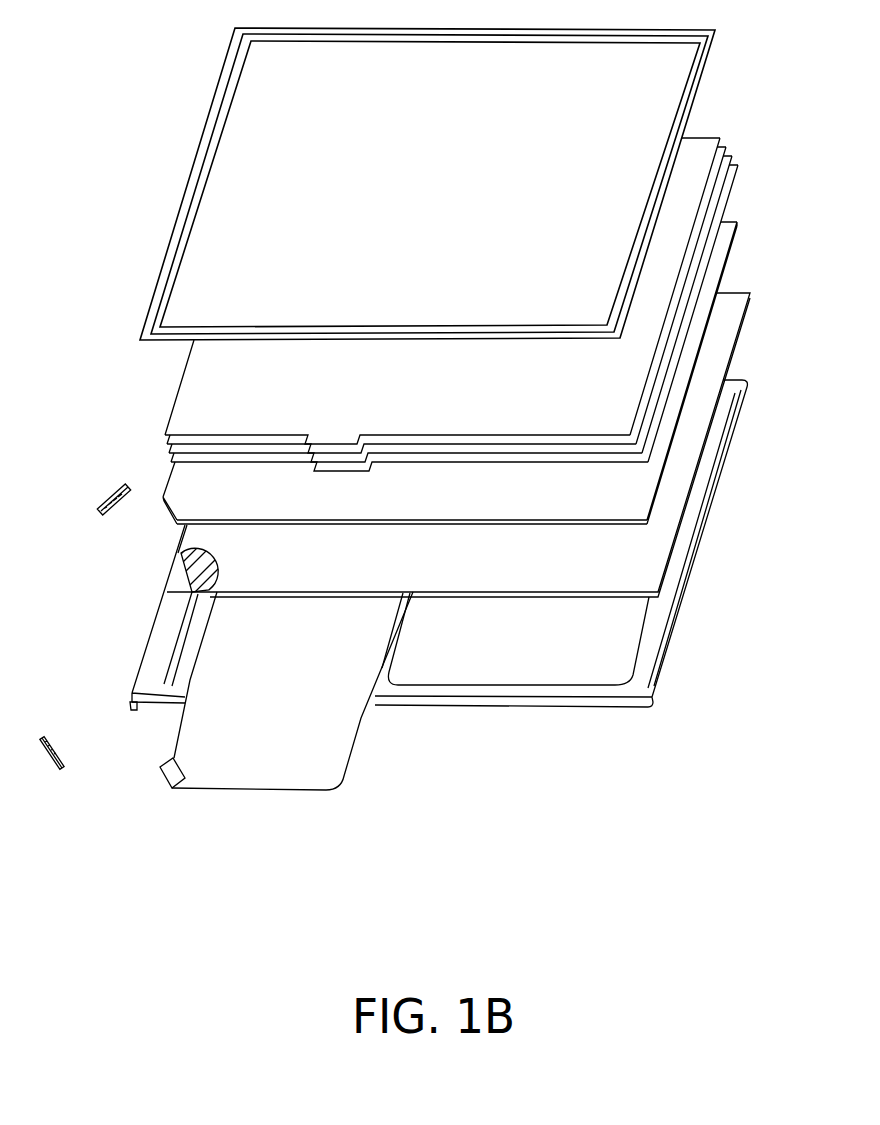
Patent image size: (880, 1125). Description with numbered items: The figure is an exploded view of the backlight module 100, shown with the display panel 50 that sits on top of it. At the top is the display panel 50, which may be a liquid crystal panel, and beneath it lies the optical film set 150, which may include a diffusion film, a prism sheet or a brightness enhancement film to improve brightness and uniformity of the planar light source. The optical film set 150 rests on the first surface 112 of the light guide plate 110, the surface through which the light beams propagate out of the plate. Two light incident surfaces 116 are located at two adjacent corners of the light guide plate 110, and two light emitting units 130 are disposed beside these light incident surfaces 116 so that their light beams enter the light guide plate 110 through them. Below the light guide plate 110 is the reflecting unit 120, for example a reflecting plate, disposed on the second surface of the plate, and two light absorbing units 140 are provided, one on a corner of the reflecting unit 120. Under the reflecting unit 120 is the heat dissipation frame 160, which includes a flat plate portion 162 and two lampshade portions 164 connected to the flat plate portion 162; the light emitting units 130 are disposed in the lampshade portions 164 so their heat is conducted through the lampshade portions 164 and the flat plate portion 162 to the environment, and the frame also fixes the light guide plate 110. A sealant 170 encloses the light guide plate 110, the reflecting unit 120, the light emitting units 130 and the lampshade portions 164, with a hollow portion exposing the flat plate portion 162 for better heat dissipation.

The display panel 50 is at (692, 63).
The optical film set 150 is at (741, 138).
The light guide plate 110 is at (436, 370).
The first surface 112 is at (647, 492).
The light incident surfaces 116 is at (157, 517).
The reflecting unit 120 is at (732, 315).
The sealant 170 is at (740, 438).
The light absorbing units 140 is at (180, 580).
The light emitting units 130 is at (108, 493).
The heat dissipation frame 160 is at (284, 740).
The flat plate portion 162 is at (245, 777).
The lampshade portions 164 is at (172, 803).
The backlight module 100 is at (785, 869).